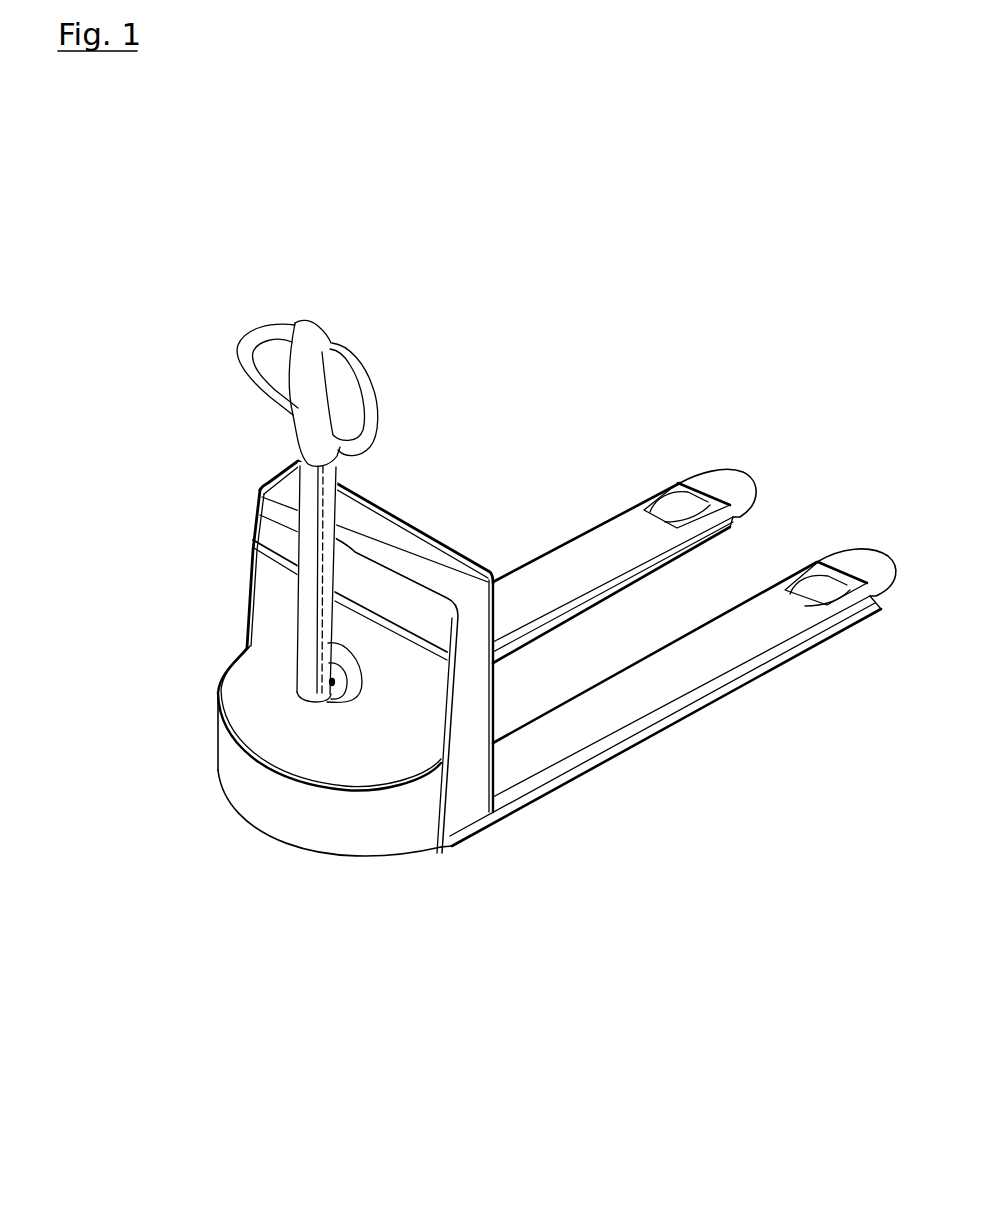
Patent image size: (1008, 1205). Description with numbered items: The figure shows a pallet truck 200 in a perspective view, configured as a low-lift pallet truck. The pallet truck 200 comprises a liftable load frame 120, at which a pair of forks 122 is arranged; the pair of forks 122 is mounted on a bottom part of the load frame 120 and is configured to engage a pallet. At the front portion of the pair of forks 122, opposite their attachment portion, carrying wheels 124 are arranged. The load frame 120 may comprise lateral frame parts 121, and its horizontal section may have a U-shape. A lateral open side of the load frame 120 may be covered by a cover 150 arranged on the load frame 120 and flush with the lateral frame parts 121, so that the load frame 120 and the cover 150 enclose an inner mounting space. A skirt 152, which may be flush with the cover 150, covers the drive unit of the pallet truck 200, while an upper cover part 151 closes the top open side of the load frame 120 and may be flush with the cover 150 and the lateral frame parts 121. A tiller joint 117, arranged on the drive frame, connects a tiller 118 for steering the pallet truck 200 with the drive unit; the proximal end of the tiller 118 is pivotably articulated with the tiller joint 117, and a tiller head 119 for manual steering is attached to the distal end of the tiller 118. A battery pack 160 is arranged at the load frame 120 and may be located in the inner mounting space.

The pallet truck 200 is at (808, 245).
The tiller joint 117 is at (335, 697).
The tiller 118 is at (312, 577).
The tiller head 119 is at (310, 432).
The load frame 120 is at (496, 668).
The lateral frame parts 121 is at (248, 613).
The pair of forks 122 is at (537, 582).
The carrying wheels 124 is at (678, 512).
The cover 150 is at (268, 713).
The upper cover part 151 is at (420, 553).
The skirt 152 is at (303, 812).
The battery pack 160 is at (293, 493).